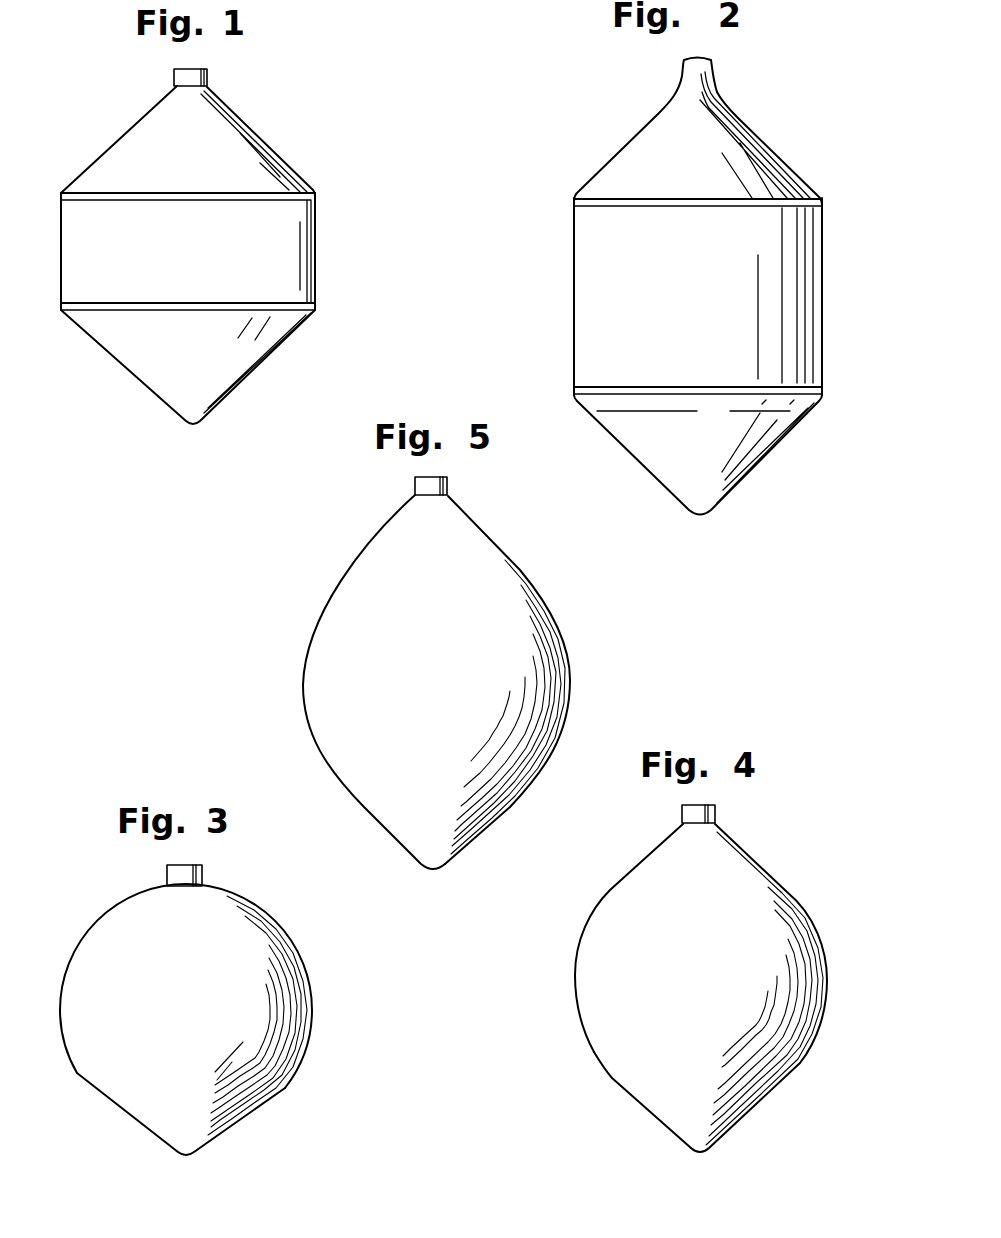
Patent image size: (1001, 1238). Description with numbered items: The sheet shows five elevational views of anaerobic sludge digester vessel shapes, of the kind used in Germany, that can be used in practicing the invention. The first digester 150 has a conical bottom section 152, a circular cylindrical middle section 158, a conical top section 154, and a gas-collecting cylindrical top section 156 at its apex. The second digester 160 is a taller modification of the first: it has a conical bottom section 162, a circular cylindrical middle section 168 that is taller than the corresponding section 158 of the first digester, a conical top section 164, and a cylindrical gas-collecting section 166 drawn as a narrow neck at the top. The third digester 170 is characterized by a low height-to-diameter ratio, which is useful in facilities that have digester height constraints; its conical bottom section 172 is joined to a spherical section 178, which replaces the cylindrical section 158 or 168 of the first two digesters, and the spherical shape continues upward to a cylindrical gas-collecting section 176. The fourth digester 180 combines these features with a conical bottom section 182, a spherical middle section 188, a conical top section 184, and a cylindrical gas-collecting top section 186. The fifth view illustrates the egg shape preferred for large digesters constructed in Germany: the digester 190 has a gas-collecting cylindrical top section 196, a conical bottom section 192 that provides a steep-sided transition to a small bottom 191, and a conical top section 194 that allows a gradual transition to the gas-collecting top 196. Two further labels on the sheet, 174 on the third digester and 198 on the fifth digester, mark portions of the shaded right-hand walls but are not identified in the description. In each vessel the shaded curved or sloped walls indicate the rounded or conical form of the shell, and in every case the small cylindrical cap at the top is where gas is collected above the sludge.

In FIG. 1, the digester 150 is at (280, 124).
In FIG. 1, the conical bottom section 152 is at (241, 380).
In FIG. 1, the conical top section 154 is at (126, 134).
In FIG. 1, the gas-collecting cylindrical top section 156 is at (211, 80).
In FIG. 1, the circular cylindrical middle section 158 is at (317, 250).
In FIG. 2, the digester 160 is at (568, 189).
In FIG. 2, the conical bottom section 162 is at (762, 463).
In FIG. 2, the conical top section 164 is at (755, 130).
In FIG. 2, the cylindrical gas-collecting section 166 is at (682, 70).
In FIG. 2, the circular cylindrical middle section 168 is at (573, 282).
In FIG. 3, the digester 170 is at (63, 943).
In FIG. 3, the conical bottom section 172 is at (112, 1108).
In FIG. 3, the upper rounded portion 174 is at (278, 922).
In FIG. 3, the cylindrical gas-collecting section 176 is at (166, 878).
In FIG. 3, the spherical section 178 is at (313, 1022).
In FIG. 4, the digester 180 is at (791, 867).
In FIG. 4, the conical bottom section 182 is at (609, 1073).
In FIG. 4, the conical top section 184 is at (623, 882).
In FIG. 4, the cylindrical gas-collecting cylindrical top section 186 is at (716, 813).
In FIG. 4, the spherical middle section 188 is at (575, 974).
In FIG. 5, the digester 190 is at (302, 608).
In FIG. 5, the small bottom 191 is at (441, 876).
In FIG. 5, the conical bottom section 192 is at (505, 818).
In FIG. 5, the conical top section 194 is at (503, 541).
In FIG. 5, the gas-collecting cylindrical top section 196 is at (415, 486).
In FIG. 5, the side wall 198 is at (572, 658).